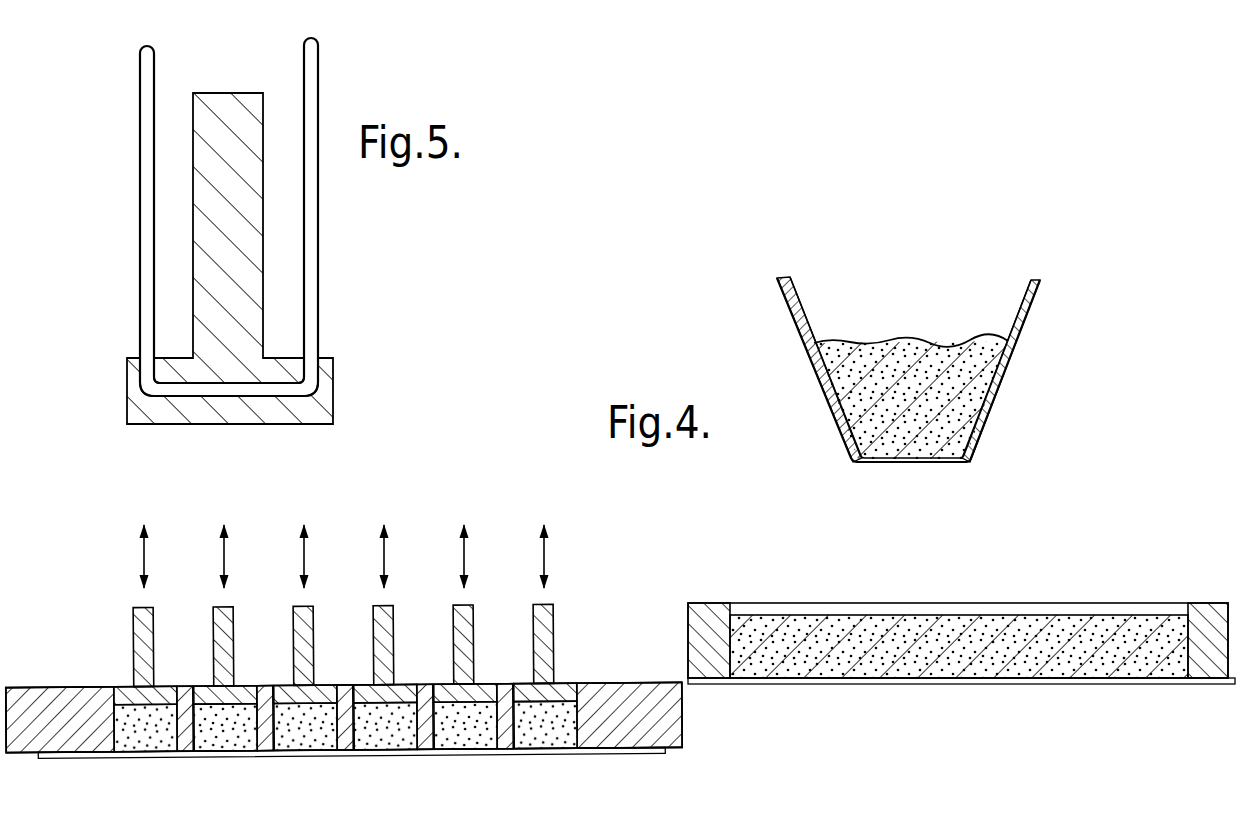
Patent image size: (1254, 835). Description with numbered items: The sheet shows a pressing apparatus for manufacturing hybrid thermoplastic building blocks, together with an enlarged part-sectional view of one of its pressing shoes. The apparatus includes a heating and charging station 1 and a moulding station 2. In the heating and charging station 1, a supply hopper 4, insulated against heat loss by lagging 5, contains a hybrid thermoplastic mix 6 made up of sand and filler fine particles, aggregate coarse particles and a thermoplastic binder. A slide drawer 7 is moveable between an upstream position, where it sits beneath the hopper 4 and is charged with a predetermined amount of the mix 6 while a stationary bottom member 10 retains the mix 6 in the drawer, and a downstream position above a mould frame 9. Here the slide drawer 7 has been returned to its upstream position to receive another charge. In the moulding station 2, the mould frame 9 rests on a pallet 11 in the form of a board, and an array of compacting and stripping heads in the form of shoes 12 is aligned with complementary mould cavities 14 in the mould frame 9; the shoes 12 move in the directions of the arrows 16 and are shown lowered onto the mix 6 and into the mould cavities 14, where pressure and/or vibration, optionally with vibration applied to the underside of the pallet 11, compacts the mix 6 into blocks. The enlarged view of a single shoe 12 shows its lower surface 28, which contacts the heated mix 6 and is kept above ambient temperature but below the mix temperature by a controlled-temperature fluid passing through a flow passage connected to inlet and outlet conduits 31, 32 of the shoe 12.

In FIG. 4, the heating and charging station 1 is at (943, 700).
In FIG. 4, the moulding station 2 is at (123, 767).
In FIG. 4, the supply hopper 4 is at (1033, 288).
In FIG. 4, the lagging 5 is at (832, 412).
In FIG. 4, the hybrid thermoplastic mix 6 is at (893, 352).
In FIG. 4, the slide drawer 7 is at (712, 618).
In FIG. 4, the mould frame 9 is at (60, 700).
In FIG. 4, the stationary bottom member 10 is at (1110, 681).
In FIG. 4, the pallet 11 is at (548, 755).
In FIG. 5, the shoe 12 is at (343, 255).
In FIG. 4, the shoe 12 is at (235, 636).
In FIG. 4, the mould cavity 14 is at (250, 737).
In FIG. 4, the arrows 16 is at (222, 557).
In FIG. 5, the lower surface 28 is at (287, 425).
In FIG. 5, the inlet conduit 31 is at (140, 300).
In FIG. 5, the outlet conduit 32 is at (318, 315).